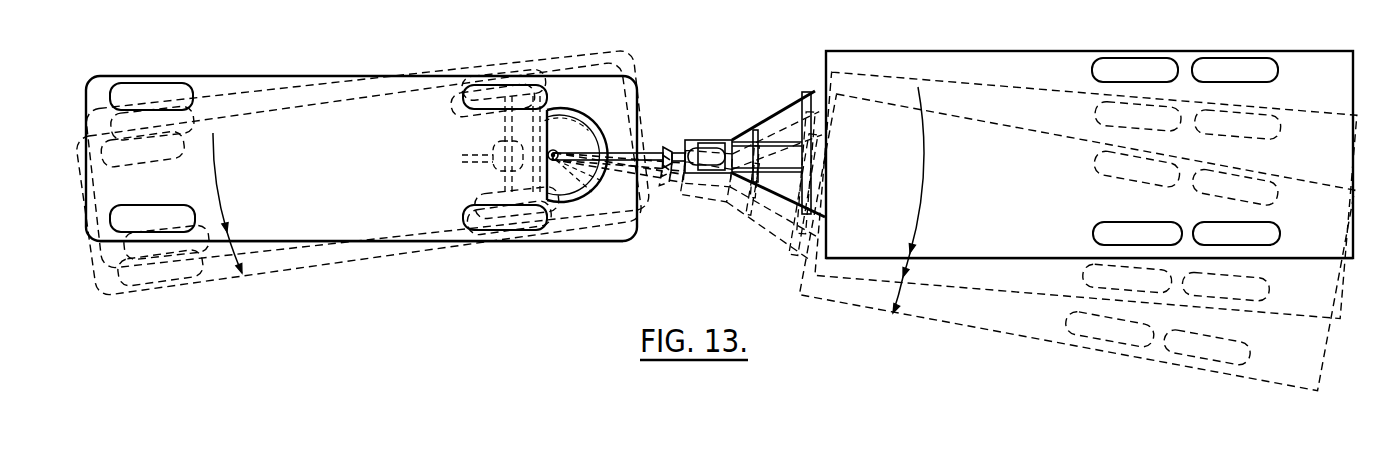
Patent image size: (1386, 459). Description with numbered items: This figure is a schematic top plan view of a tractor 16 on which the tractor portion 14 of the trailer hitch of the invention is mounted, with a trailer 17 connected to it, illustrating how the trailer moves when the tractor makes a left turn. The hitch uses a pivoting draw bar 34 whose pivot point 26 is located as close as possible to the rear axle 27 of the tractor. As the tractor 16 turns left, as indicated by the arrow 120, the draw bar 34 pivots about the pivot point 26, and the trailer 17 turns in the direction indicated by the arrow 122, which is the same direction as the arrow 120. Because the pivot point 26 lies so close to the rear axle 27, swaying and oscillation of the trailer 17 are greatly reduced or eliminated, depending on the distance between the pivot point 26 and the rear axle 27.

The tractor portion 14 is at (597, 122).
The tractor 16 is at (330, 73).
The trailer 17 is at (1004, 47).
The pivot point 26 is at (565, 167).
The rear axle 27 is at (505, 173).
The draw bar 34 is at (645, 148).
The arrow 120 is at (233, 183).
The arrow 122 is at (924, 184).